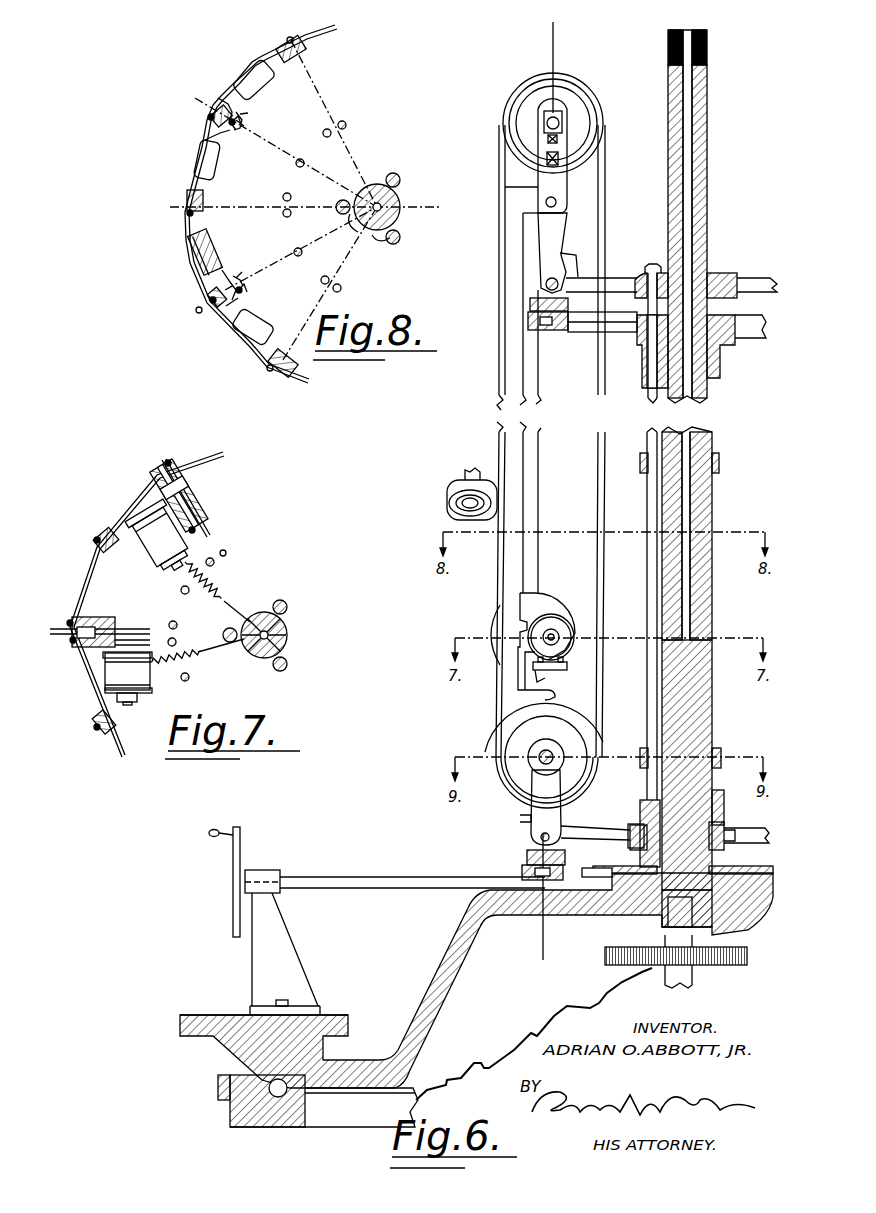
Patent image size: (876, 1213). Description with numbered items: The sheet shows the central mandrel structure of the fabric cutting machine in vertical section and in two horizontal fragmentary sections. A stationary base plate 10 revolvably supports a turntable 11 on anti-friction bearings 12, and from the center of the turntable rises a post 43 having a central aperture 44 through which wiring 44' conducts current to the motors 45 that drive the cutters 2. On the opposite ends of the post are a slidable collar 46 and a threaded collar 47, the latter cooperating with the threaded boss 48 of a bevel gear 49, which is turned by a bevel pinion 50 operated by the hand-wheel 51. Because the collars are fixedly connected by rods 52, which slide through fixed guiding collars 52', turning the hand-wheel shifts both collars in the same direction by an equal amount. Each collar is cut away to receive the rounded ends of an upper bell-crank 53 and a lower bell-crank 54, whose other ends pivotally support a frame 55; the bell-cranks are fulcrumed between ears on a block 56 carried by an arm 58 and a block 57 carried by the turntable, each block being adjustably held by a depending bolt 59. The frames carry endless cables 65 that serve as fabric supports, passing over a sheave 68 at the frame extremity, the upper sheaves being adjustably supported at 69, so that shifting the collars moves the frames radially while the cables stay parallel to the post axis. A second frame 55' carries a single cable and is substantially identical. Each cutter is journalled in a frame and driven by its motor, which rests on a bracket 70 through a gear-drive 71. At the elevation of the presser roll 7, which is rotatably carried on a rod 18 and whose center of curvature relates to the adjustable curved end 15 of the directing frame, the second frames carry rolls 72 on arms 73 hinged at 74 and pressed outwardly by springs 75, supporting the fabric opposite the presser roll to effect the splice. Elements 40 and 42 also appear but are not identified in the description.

In FIG. 8, the cutters 2 is at (261, 204).
In FIG. 7, the cutters 2 is at (162, 462).
In FIG. 6, the cutters 2 is at (493, 618).
In FIG. 6, the presser roll 7 is at (447, 503).
In FIG. 6, the base plate 10 is at (295, 1127).
In FIG. 6, the turntable 11 is at (205, 1015).
In FIG. 6, the anti-friction bearings 12 is at (262, 1112).
In FIG. 6, the curved end 15 is at (553, 22).
In FIG. 6, the rod 18 is at (465, 471).
In FIG. 6, the drive shaft 40 is at (668, 975).
In FIG. 6, the gear 42 is at (722, 966).
In FIG. 8, the post 43 is at (398, 202).
In FIG. 7, the post 43 is at (285, 624).
In FIG. 6, the post 43 is at (709, 700).
In FIG. 8, the central aperture 44 is at (400, 218).
In FIG. 7, the central aperture 44 is at (286, 640).
In FIG. 6, the central aperture 44 is at (703, 335).
In FIG. 7, the wiring 44' is at (199, 612).
In FIG. 7, the motors 45 is at (150, 552).
In FIG. 6, the motors 45 is at (558, 626).
In FIG. 6, the slidable collar 46 is at (725, 274).
In FIG. 6, the threaded collar 47 is at (728, 832).
In FIG. 6, the threaded boss 48 is at (724, 852).
In FIG. 6, the bevel gear 49 is at (624, 868).
In FIG. 6, the bevel pinion 50 is at (595, 892).
In FIG. 6, the hand-wheel 51 is at (235, 842).
In FIG. 8, the rods 52 is at (367, 201).
In FIG. 7, the rods 52 is at (263, 626).
In FIG. 6, the rods 52 is at (639, 565).
In FIG. 6, the guiding collars 52' is at (683, 600).
In FIG. 6, the upper bell-crank 53 is at (586, 833).
In FIG. 6, the lower bell-crank 54 is at (574, 276).
In FIG. 8, the frame 55 is at (260, 206).
In FIG. 7, the frame 55 is at (149, 553).
In FIG. 6, the frame 55 is at (485, 550).
In FIG. 8, the second frame 55' is at (203, 206).
In FIG. 7, the second frame 55' is at (118, 623).
In FIG. 6, the block 56 is at (530, 852).
In FIG. 6, the block 57 is at (530, 302).
In FIG. 6, the arm 58 is at (585, 333).
In FIG. 6, the depending bolt 59 is at (530, 322).
In FIG. 8, the cables 65 is at (291, 38).
In FIG. 7, the cables 65 is at (170, 461).
In FIG. 6, the cables 65 is at (500, 172).
In FIG. 6, the sheave 68 is at (512, 106).
In FIG. 6, the adjustable sheave support 69 is at (560, 140).
In FIG. 6, the bracket 70 is at (548, 672).
In FIG. 7, the gear-drive 71 is at (200, 525).
In FIG. 8, the rolls 72 is at (250, 70).
In FIG. 8, the arms 73 is at (226, 102).
In FIG. 8, the hinge 74 is at (233, 126).
In FIG. 8, the springs 75 is at (245, 113).